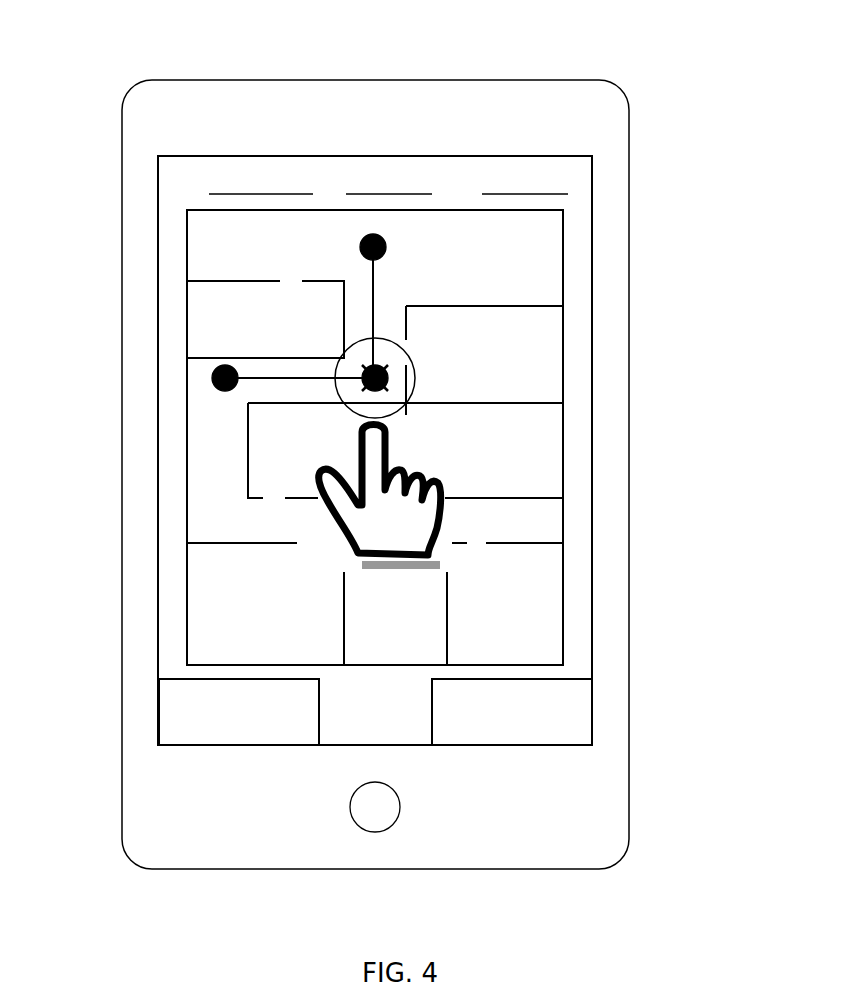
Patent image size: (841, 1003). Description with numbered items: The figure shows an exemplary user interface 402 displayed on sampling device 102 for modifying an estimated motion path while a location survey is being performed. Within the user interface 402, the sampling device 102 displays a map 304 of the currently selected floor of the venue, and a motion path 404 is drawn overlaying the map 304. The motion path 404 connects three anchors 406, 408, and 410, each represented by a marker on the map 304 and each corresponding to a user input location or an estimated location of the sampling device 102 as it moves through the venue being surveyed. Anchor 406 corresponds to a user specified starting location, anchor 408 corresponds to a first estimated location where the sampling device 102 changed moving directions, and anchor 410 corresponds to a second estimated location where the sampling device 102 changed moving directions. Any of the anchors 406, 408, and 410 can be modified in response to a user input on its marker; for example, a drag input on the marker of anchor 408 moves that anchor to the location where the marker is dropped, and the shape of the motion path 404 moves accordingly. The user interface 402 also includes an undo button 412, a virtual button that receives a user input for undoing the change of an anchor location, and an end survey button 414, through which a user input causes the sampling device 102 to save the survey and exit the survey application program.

The sampling device 102 is at (297, 80).
The map 304 is at (187, 438).
The user interface 402 is at (158, 285).
The motion path 404 is at (373, 290).
The anchor 406 is at (360, 250).
The anchor 408 is at (386, 383).
The anchor 410 is at (213, 374).
The undo button 412 is at (178, 699).
The end survey button 414 is at (578, 707).